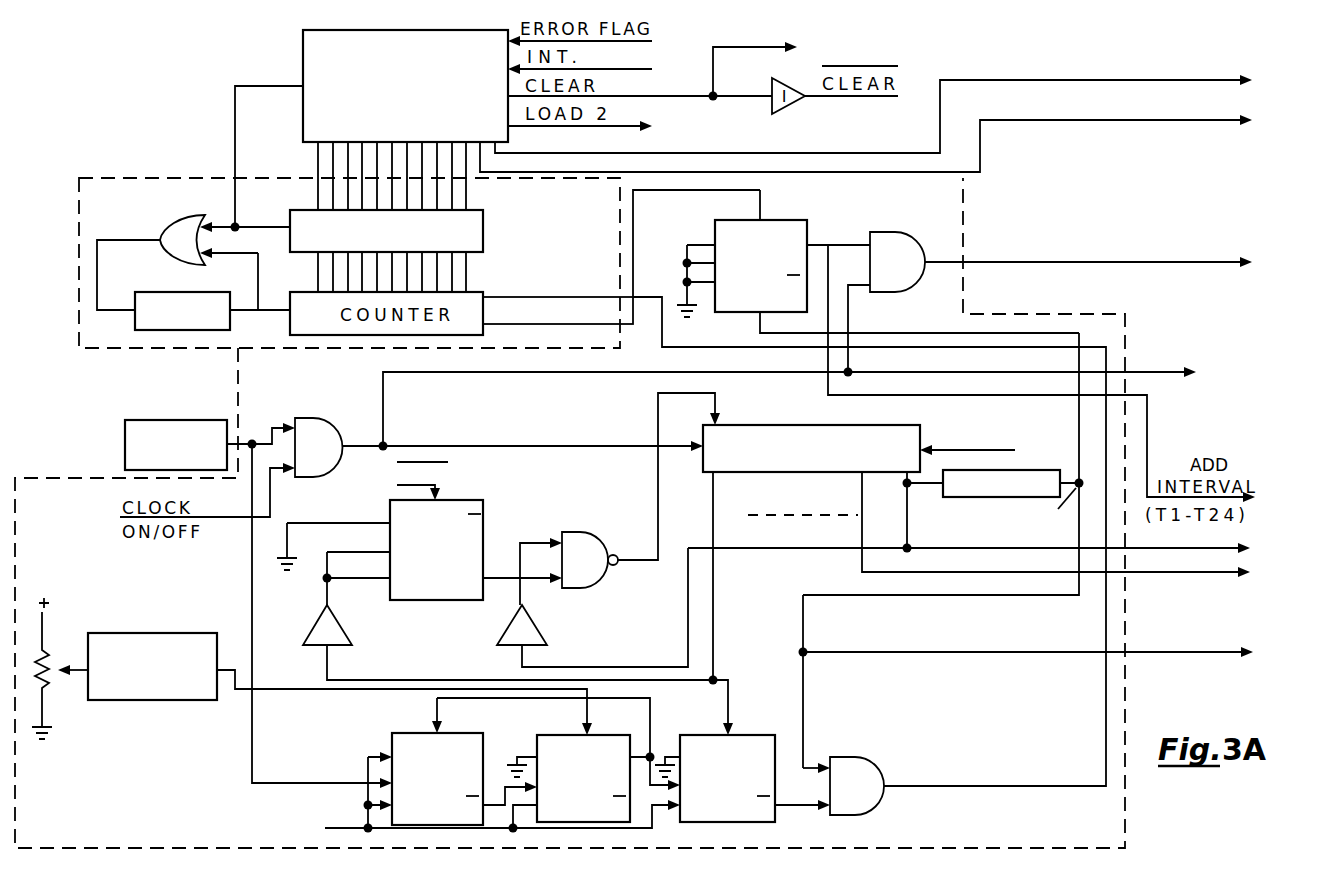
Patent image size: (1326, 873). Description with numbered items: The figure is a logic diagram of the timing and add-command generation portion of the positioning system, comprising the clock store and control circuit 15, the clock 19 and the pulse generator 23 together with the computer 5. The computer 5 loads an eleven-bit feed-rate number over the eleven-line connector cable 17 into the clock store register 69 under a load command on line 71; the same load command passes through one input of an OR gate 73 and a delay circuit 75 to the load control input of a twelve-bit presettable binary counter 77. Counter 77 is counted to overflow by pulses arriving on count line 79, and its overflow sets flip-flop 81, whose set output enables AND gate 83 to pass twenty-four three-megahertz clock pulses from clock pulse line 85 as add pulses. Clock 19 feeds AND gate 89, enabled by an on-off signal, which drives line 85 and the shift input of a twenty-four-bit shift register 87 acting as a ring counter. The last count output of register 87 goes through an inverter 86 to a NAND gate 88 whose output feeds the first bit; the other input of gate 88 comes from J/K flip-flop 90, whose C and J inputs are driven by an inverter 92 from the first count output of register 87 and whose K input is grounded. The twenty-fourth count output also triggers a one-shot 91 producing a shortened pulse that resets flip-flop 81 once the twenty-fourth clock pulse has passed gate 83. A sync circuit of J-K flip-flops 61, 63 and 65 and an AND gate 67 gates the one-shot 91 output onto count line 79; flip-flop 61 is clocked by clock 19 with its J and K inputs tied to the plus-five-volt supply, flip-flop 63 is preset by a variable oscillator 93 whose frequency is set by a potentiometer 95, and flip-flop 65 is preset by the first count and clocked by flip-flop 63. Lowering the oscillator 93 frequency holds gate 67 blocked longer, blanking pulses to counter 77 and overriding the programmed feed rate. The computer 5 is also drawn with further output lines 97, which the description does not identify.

The computer 5 is at (397, 130).
The clock store (CLKSTR) register and control circuit 15 is at (88, 178).
The 11-line connector cable 17 is at (348, 168).
The clock 19 is at (150, 420).
The pulse generator 23 is at (1126, 332).
The J-K flip-flop 61 is at (425, 733).
The J-K flip-flop 63 is at (580, 733).
The J-K flip-flop 65 is at (722, 733).
The AND gate 67 is at (862, 760).
The clock store (CLKSTR) register 69 is at (485, 223).
The load command line 71 is at (235, 100).
The OR gate 73 is at (170, 229).
The delay circuit 75 is at (185, 292).
The presettable binary counter 77 is at (472, 288).
The count line 79 is at (700, 347).
The flip-flop 81 is at (808, 230).
The AND gate 83 is at (888, 292).
The clock pulse line 85 is at (1152, 372).
The inverter 86 is at (540, 630).
The shift register 87 is at (843, 425).
The NAND gate 88 is at (598, 538).
The AND gate 89 is at (305, 418).
The J/K flip-flop 90 is at (484, 515).
The one-shot 91 is at (1013, 471).
The inverter 92 is at (345, 630).
The variable oscillator 93 is at (167, 700).
The potentiometer 95 is at (45, 690).
The X and Y distance output lines 97 is at (688, 172).